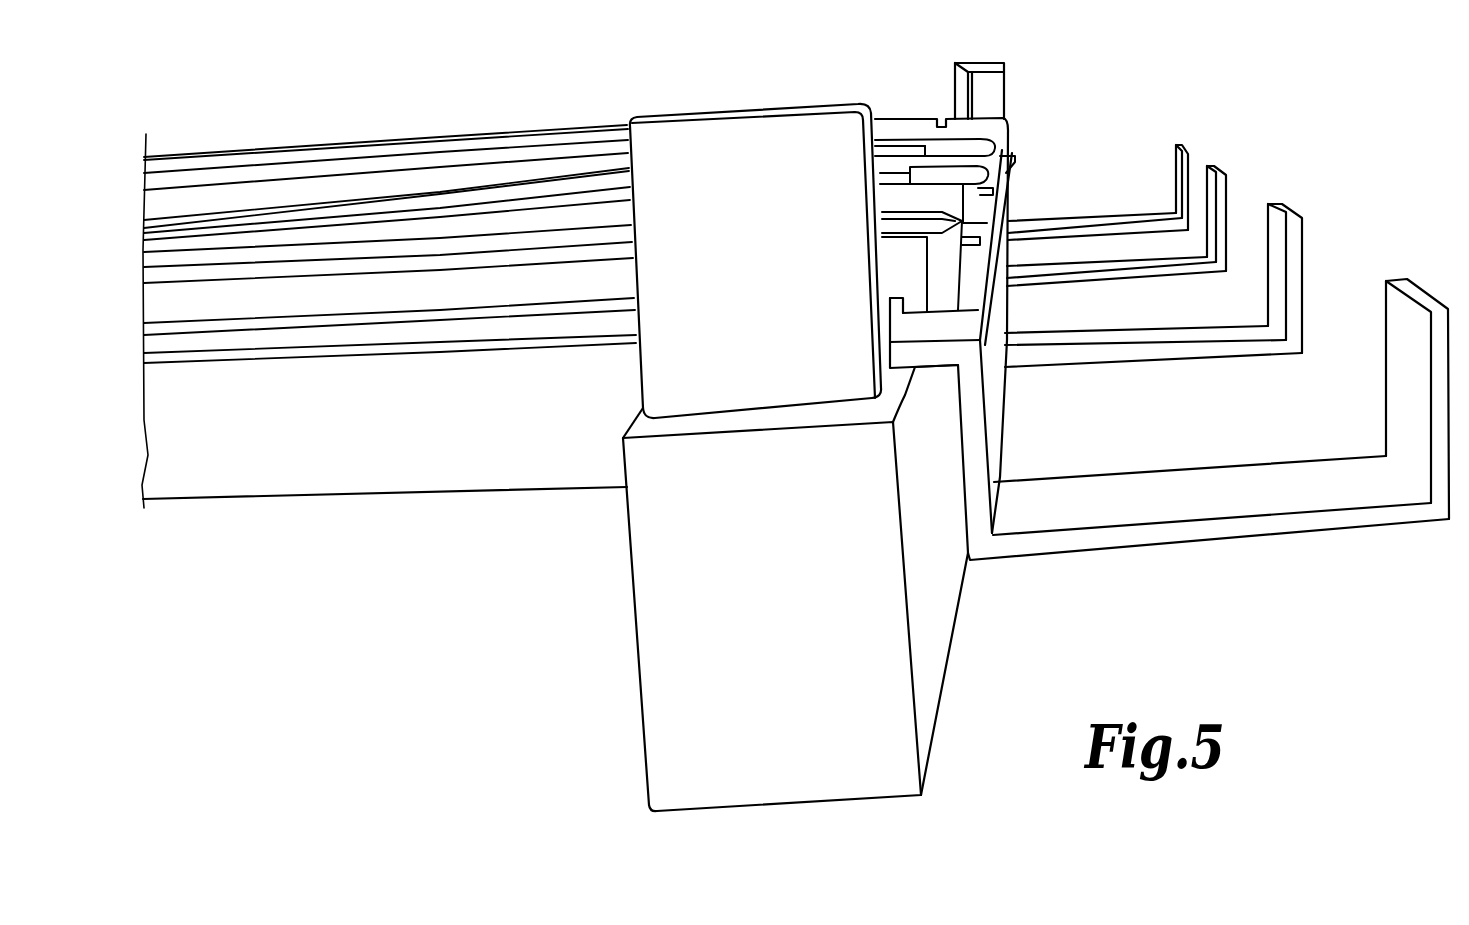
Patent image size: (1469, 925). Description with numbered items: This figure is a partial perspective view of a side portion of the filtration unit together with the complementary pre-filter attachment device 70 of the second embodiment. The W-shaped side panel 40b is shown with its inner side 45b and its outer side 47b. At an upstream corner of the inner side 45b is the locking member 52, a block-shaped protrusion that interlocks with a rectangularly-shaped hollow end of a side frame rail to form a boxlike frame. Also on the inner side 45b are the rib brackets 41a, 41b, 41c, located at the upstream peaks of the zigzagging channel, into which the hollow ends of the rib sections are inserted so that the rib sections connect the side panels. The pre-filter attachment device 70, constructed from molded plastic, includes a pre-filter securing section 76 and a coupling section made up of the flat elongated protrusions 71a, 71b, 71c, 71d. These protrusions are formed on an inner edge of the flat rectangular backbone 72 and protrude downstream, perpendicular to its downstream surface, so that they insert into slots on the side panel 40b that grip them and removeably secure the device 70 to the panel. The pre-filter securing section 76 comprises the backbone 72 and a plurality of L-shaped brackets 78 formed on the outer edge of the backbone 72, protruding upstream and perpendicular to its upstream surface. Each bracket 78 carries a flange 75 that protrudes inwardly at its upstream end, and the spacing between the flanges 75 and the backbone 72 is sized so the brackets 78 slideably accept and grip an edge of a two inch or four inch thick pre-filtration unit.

The locking member 52 is at (1000, 83).
The rib bracket 41a is at (953, 242).
The rib bracket 41b is at (980, 188).
The rib bracket 41c is at (1003, 148).
The flat elongated protrusion 71a is at (967, 317).
The flat elongated protrusion 71b is at (975, 230).
The flat elongated protrusion 71c is at (993, 187).
The flat elongated protrusion 71d is at (1010, 160).
The pre-filter attachment device 70 is at (1340, 226).
The flat rectangular backbone 72 is at (991, 379).
The flange 75 is at (1420, 295).
The pre-filter securing section 76 is at (1292, 551).
The bracket 78 is at (1307, 470).
The inner side 45b is at (289, 355).
The outer side 47b is at (432, 490).
The side panel 40b is at (922, 797).